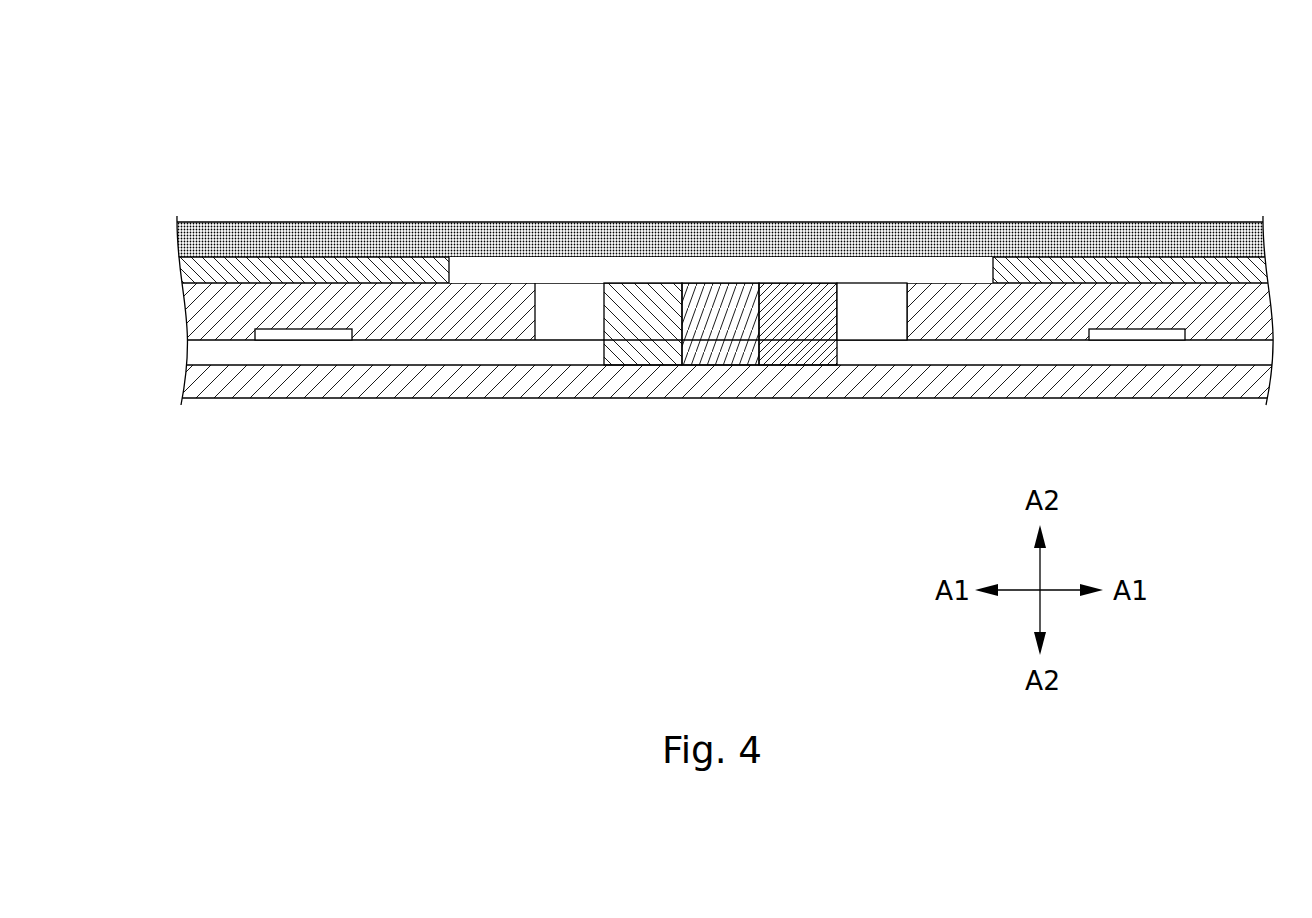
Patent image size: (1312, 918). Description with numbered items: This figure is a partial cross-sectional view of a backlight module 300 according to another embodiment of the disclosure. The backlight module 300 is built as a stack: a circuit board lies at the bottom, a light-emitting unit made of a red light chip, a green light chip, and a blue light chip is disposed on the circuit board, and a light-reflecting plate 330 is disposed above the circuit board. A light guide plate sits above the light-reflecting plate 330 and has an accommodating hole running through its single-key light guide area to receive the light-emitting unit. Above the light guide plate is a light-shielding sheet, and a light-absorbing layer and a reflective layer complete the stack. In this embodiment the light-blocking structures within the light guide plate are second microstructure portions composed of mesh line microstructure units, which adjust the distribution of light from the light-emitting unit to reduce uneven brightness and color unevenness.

The backlight module 300 is at (1287, 73).
The light-reflecting plate 330 is at (195, 354).